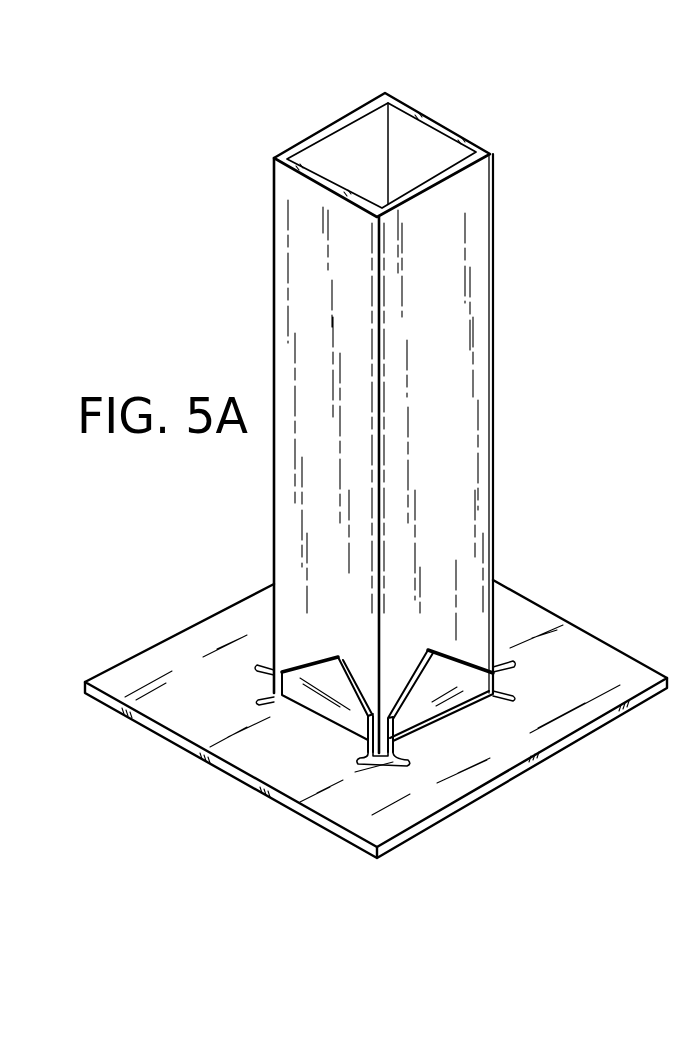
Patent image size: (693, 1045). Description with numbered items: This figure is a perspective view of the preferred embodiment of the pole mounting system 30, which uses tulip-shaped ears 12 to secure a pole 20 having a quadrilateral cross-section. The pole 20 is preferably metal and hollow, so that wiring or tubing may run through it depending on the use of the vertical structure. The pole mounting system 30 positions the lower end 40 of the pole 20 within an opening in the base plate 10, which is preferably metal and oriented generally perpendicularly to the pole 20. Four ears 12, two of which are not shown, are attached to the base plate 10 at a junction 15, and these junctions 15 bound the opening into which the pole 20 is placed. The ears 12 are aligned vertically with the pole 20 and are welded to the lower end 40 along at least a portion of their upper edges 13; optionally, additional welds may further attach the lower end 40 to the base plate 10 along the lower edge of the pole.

The base plate 10 is at (588, 647).
The ears 12 is at (325, 677).
The upper edges 13 is at (318, 658).
The junction 15 is at (312, 717).
The pole 20 is at (453, 255).
The pole mounting system 30 is at (493, 335).
The lower end 40 is at (462, 620).